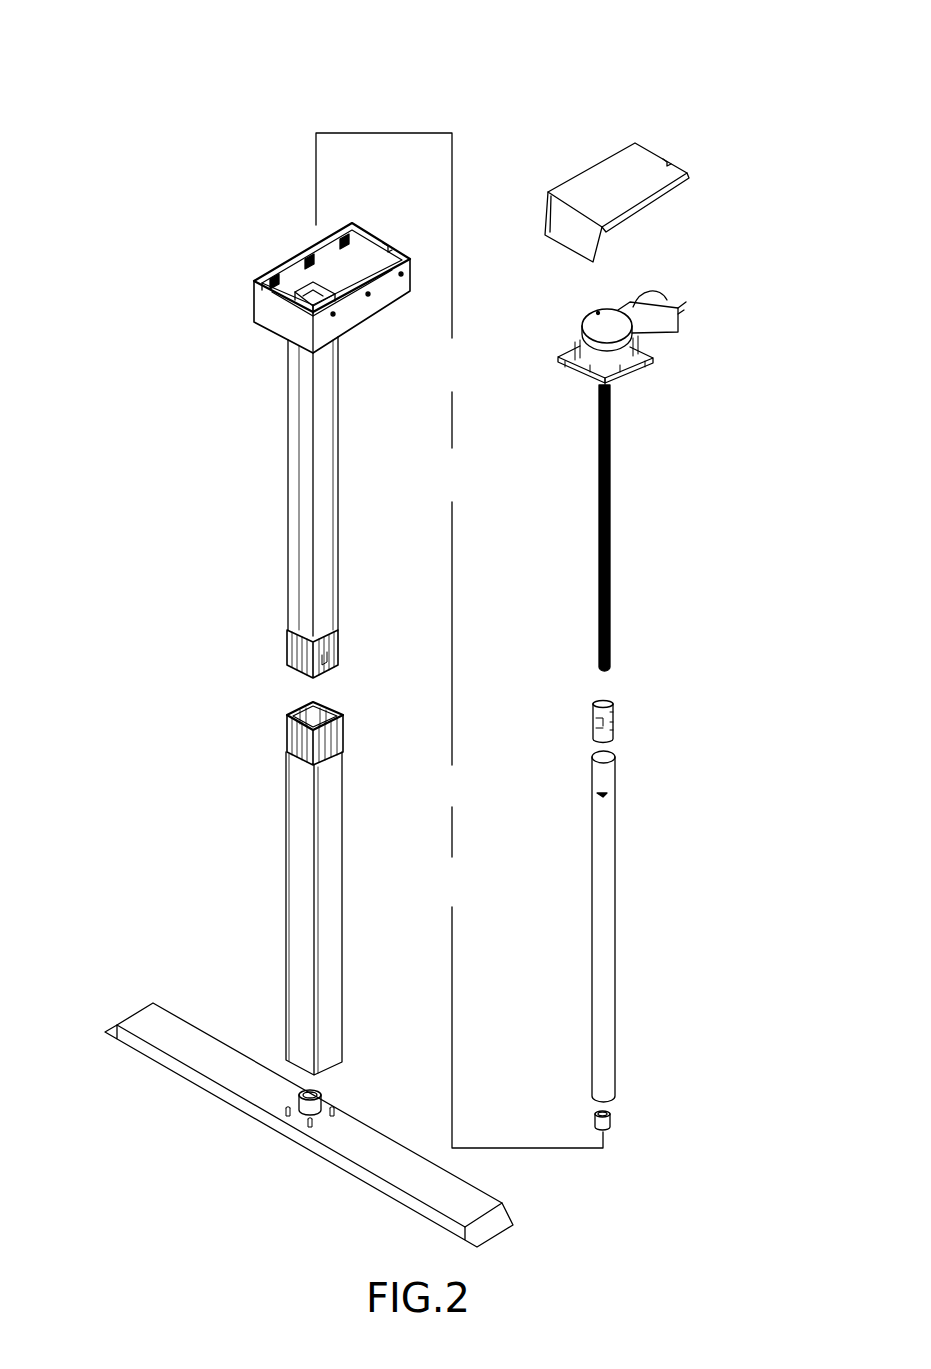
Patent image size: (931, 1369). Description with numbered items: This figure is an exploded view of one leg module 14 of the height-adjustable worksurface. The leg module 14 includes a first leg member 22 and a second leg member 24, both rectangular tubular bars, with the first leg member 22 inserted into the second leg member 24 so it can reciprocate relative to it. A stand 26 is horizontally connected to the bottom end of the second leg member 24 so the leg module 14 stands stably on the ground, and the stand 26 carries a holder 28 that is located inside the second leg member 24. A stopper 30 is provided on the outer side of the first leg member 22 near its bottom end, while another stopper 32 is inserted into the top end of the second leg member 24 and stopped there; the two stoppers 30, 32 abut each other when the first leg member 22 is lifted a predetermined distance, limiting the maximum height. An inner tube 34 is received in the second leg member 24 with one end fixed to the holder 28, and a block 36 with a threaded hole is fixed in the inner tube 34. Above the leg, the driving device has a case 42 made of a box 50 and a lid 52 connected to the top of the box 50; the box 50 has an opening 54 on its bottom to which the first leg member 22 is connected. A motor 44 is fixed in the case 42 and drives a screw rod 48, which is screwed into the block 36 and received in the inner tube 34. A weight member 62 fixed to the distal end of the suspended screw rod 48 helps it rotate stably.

The leg module 14 is at (677, 117).
The first leg member 22 is at (300, 472).
The second leg member 24 is at (295, 850).
The stand 26 is at (188, 1042).
The holder 28 is at (303, 1112).
The stopper 30 is at (337, 642).
The stopper 32 is at (302, 738).
The inner tube 34 is at (607, 892).
The block 36 is at (613, 723).
The case 42 is at (578, 98).
The motor 44 is at (618, 325).
The screw rod 48 is at (610, 546).
The box 50 is at (373, 232).
The lid 52 is at (617, 172).
The opening 54 is at (313, 297).
The weight member 62 is at (612, 1118).